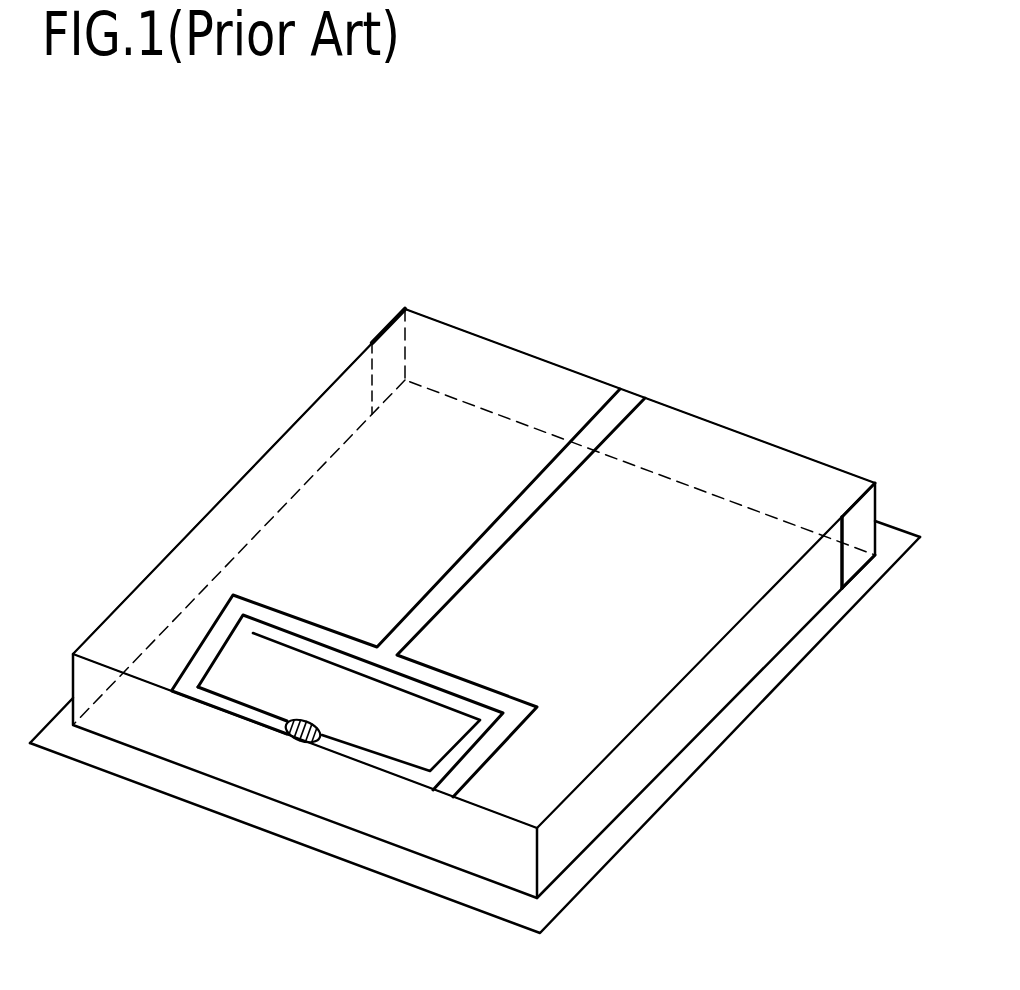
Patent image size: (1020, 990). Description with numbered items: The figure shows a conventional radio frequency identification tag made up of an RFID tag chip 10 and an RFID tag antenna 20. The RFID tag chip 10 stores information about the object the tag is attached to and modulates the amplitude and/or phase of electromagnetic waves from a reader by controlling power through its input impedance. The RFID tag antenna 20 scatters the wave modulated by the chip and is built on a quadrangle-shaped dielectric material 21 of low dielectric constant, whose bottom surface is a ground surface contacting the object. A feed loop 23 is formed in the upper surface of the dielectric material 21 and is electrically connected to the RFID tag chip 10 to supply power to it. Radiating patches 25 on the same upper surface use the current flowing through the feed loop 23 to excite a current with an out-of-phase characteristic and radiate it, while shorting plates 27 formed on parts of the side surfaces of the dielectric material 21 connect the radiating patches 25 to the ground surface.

The RFID tag chip 10 is at (295, 741).
The RFID tag antenna 20 is at (337, 377).
The dielectric material 21 is at (628, 402).
The feed loop 23 is at (387, 769).
The radiating patches 25 is at (528, 593).
The shorting plates 27 is at (855, 535).